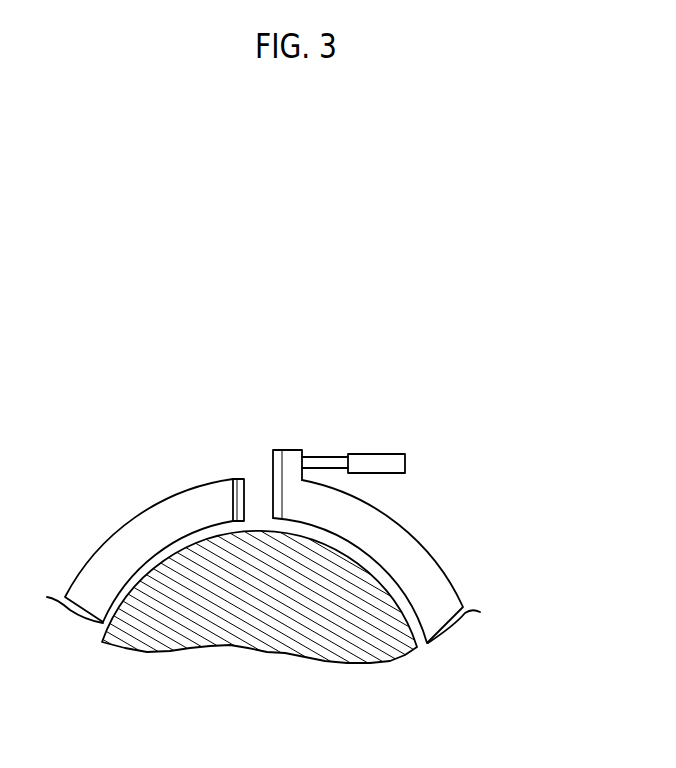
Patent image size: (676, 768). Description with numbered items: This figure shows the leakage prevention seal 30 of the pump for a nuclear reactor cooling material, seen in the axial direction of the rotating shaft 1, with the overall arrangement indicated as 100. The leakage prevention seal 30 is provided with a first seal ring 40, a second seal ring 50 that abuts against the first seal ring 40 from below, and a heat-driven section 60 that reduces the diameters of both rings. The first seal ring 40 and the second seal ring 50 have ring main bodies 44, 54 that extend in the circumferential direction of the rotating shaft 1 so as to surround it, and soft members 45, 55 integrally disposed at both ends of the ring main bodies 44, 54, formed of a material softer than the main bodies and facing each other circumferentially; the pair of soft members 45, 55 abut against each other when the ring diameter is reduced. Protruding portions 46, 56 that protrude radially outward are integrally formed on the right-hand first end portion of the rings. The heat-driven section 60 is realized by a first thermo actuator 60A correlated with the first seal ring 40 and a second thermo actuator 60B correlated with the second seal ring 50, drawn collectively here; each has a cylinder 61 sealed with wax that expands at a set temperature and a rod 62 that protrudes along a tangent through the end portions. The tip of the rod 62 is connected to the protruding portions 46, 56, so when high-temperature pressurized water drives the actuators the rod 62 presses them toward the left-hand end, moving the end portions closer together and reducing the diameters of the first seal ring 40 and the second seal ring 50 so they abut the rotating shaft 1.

The rotating shaft 1 is at (150, 643).
The leakage prevention seal 30 is at (447, 482).
The first seal ring 40 is at (321, 498).
The second seal ring 50 is at (448, 572).
The ring main body 44 is at (294, 561).
The ring main body 54 is at (380, 527).
The soft member 45 is at (209, 464).
The soft member 55 is at (242, 479).
The protruding portion 46 is at (270, 436).
The protruding portion 56 is at (273, 452).
The first thermo actuator 60A is at (390, 423).
The second thermo actuator 60B is at (390, 423).
The heat-driven section 60 is at (372, 452).
The cylinder 61 is at (402, 460).
The rod 62 is at (318, 458).
The rotor 100 is at (532, 312).